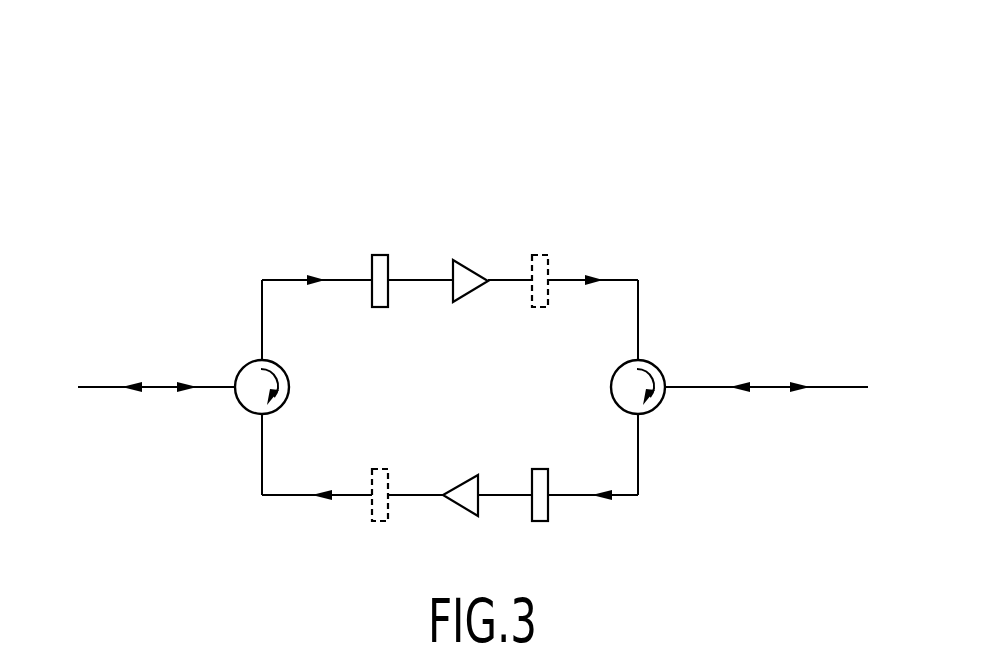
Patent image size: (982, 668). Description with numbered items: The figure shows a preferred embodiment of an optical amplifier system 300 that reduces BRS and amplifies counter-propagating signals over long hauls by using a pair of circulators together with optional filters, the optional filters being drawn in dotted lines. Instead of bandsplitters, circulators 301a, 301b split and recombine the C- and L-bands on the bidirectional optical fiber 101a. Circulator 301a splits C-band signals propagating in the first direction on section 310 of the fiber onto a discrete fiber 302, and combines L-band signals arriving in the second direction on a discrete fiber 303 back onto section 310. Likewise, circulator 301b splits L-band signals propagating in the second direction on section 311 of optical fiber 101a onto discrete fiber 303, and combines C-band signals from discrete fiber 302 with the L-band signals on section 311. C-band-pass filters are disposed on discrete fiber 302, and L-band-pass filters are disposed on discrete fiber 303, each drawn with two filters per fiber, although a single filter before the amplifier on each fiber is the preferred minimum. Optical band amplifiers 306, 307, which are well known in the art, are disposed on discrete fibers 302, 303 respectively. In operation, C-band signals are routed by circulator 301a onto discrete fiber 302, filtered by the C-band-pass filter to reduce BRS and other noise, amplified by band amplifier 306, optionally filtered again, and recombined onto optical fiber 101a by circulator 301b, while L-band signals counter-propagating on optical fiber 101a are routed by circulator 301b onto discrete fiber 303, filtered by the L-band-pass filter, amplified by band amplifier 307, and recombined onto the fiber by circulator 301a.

The optical amplifier system 300 is at (510, 138).
The optical fiber 101a is at (98, 386).
The circulator 301a is at (289, 374).
The circulator 301b is at (657, 362).
The discrete fiber 302 is at (262, 302).
The discrete fiber 303 is at (266, 496).
The optical band amplifier 306 is at (464, 260).
The optical band amplifier 307 is at (468, 476).
The section of optical fiber 310 is at (224, 390).
The section of optical fiber 311 is at (685, 389).